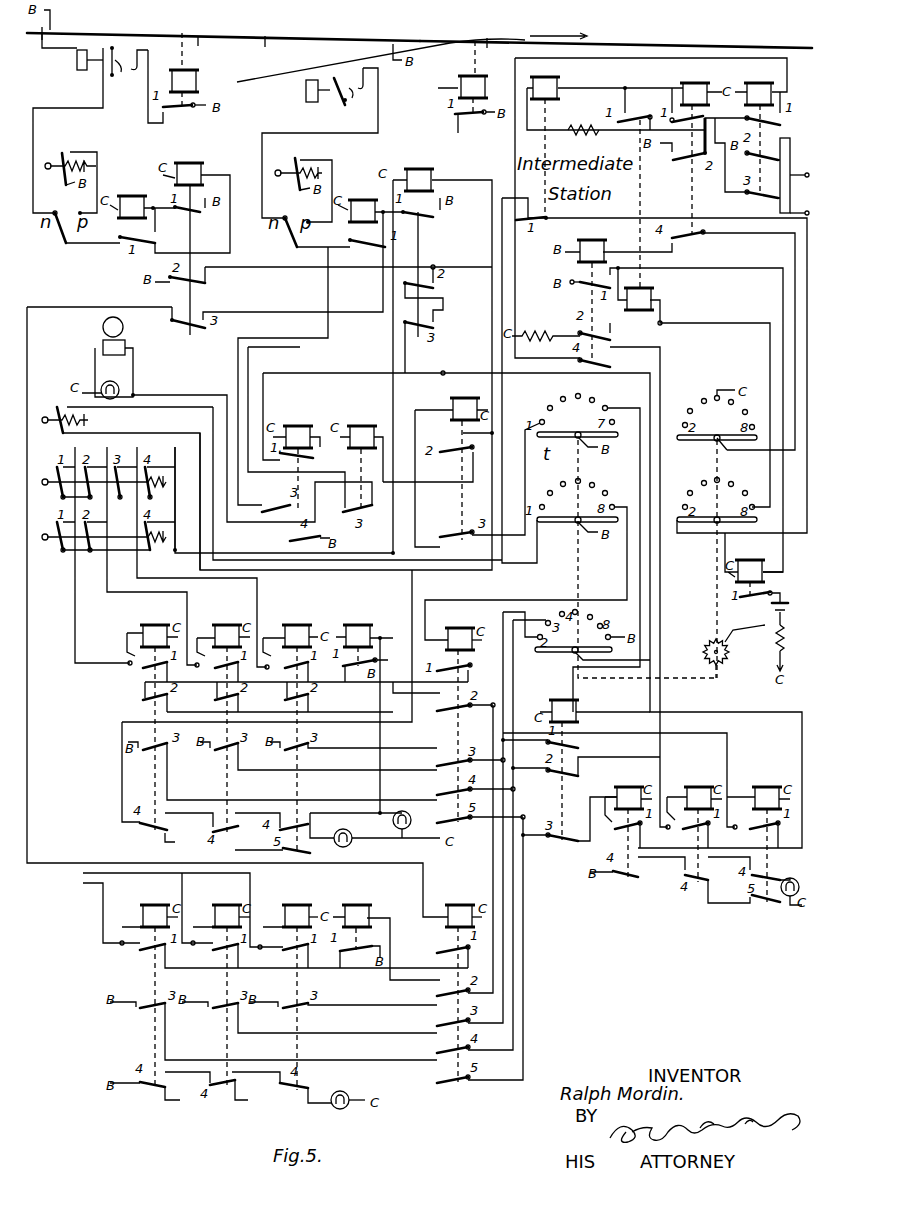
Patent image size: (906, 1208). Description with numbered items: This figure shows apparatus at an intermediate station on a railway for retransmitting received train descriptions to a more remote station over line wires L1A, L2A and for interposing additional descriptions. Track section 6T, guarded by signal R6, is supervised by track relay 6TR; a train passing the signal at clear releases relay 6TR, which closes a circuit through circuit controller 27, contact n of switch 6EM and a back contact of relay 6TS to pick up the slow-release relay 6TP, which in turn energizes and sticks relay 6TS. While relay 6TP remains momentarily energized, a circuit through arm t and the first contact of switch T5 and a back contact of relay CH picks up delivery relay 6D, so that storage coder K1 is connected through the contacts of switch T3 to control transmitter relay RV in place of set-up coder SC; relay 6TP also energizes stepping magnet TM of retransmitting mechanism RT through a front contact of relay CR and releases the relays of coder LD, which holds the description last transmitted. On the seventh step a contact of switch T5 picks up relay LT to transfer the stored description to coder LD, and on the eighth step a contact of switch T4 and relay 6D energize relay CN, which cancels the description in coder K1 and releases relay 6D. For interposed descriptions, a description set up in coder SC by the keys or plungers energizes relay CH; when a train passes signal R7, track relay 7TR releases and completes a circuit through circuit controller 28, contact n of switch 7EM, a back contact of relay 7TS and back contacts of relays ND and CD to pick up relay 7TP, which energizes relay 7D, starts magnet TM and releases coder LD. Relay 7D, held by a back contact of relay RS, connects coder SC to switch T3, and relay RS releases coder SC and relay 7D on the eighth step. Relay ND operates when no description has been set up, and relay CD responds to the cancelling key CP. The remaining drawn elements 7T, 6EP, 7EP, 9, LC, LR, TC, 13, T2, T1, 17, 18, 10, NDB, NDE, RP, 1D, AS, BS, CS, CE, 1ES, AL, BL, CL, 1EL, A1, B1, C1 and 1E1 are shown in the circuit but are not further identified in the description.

The track section 6T is at (223, 24).
The track section 7T is at (524, 48).
The signal R6 is at (70, 57).
The circuit controller 27 is at (121, 70).
The track relay 6TR is at (194, 70).
The eastbound point control 6EP is at (71, 169).
The switch 6EM is at (79, 216).
The relay 6TS is at (132, 208).
The slow release relay 6TP is at (184, 235).
The signal R7 is at (300, 92).
The circuit controller 28 is at (349, 99).
The track relay 7TR is at (451, 87).
The eastbound point control 7EP is at (302, 178).
The switch 7EM is at (309, 218).
The relay 7TS is at (361, 210).
The relay 7TP is at (413, 239).
The relay CR is at (538, 135).
The resistor 9 is at (583, 120).
The line control relay LC is at (662, 201).
The line relay LR is at (690, 147).
The transmitter relay RV is at (762, 127).
The line wire L2A is at (802, 175).
The line wire L1A is at (807, 202).
The transmitter control relay TC is at (590, 291).
The resistor 13 is at (546, 324).
The relay ND is at (291, 469).
The relay CD is at (361, 455).
The relay CH is at (451, 459).
The switch T5 is at (588, 553).
The switch T4 is at (526, 560).
The switch T3 is at (576, 635).
The stepping switch bank T2 is at (717, 415).
The stepping switch bank T1 is at (717, 501).
The retransmitting mechanism RT is at (685, 585).
The stepping magnet TM is at (754, 565).
The battery 17 is at (787, 605).
The resistor 18 is at (791, 648).
The ratchet wheel 10 is at (734, 646).
The push button NDB is at (135, 336).
The indicating lamp NDE is at (108, 373).
The lever contact RP is at (61, 414).
The cancelling key CP is at (105, 477).
The lever contacts 1D is at (104, 531).
The relay AS is at (152, 714).
The relay BS is at (223, 715).
The relay CS is at (290, 725).
The relay RS is at (364, 632).
The relay 7D is at (459, 713).
The set-up coder SC is at (267, 696).
The lamp CE is at (390, 826).
The lamp 1ES is at (340, 847).
The relay LT is at (600, 757).
The relay AL is at (628, 820).
The relay BL is at (694, 822).
The relay CL is at (770, 832).
The lamp 1EL is at (789, 878).
The coder LD is at (652, 900).
The relay A1 is at (158, 983).
The relay B1 is at (230, 983).
The relay C1 is at (299, 984).
The relay CN is at (386, 929).
The delivery relay 6D is at (459, 980).
The storage coder K1 is at (186, 1035).
The lamp 1E1 is at (343, 1091).